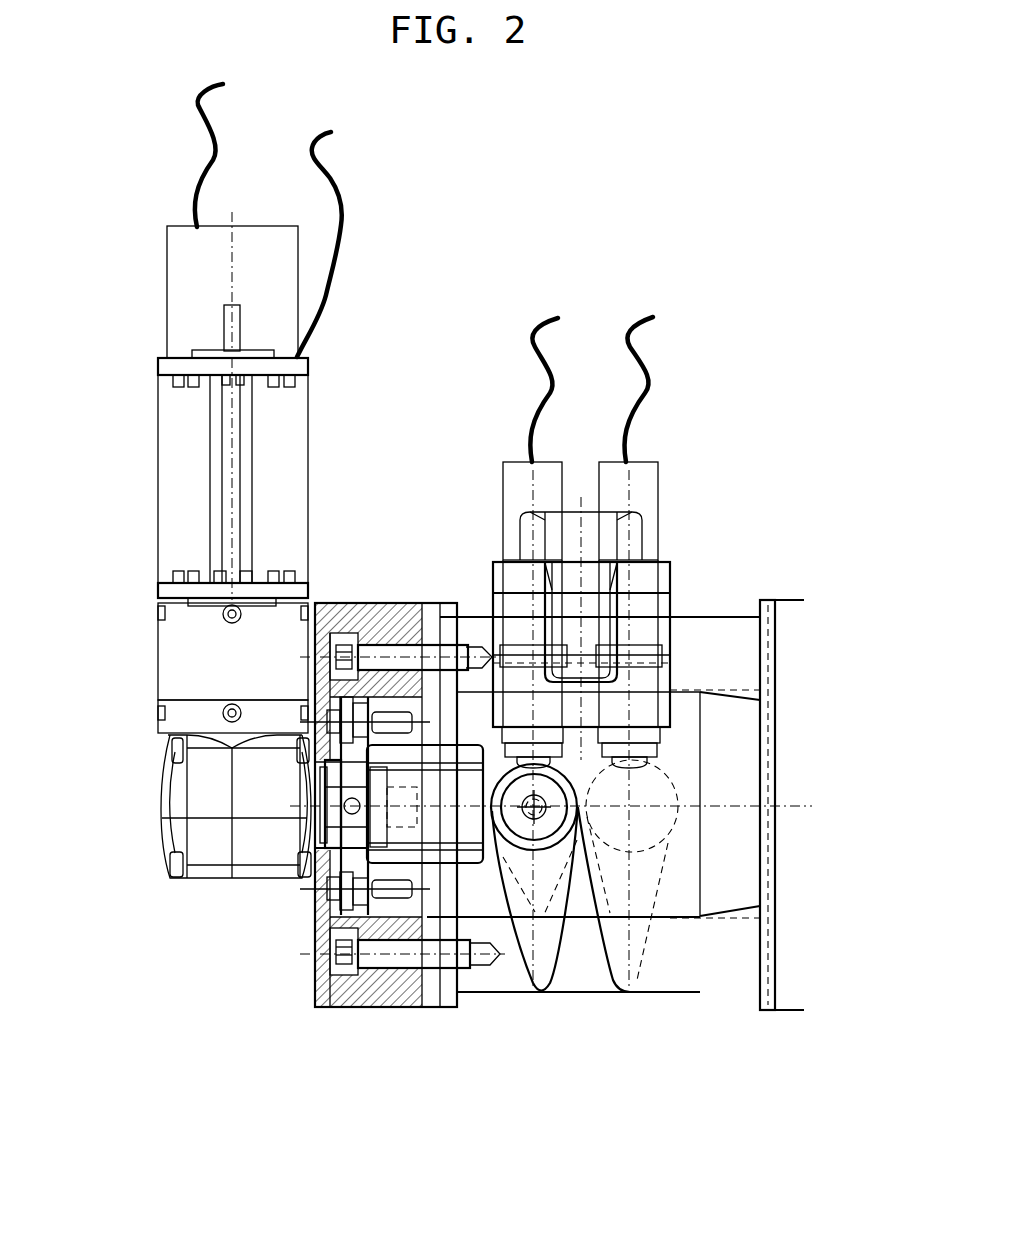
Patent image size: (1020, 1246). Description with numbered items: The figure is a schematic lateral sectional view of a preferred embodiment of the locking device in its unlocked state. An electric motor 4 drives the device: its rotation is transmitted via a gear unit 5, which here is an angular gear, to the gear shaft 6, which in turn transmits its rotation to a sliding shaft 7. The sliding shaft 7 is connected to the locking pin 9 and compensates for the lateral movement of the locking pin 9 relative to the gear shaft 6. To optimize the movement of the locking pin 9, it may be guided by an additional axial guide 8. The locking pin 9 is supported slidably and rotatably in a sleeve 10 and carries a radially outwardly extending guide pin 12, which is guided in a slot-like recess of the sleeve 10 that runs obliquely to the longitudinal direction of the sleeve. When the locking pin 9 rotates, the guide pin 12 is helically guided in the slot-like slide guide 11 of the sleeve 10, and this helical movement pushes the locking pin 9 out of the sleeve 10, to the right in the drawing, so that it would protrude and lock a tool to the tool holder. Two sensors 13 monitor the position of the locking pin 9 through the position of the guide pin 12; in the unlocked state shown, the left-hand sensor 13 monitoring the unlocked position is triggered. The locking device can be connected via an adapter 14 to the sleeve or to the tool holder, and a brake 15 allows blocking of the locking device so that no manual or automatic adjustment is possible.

The electric motor 4 is at (190, 517).
The gear unit 5 is at (214, 795).
The gear shaft 6 is at (336, 818).
The sliding shaft 7 is at (393, 856).
The axial guide 8 is at (336, 940).
The locking pin 9 is at (739, 762).
The sleeve 10 is at (506, 986).
The slide guide 11 is at (587, 936).
The guide pin 12 is at (580, 805).
The sensor 13 is at (542, 464).
The adapter 14 is at (377, 982).
The brake 15 is at (206, 283).